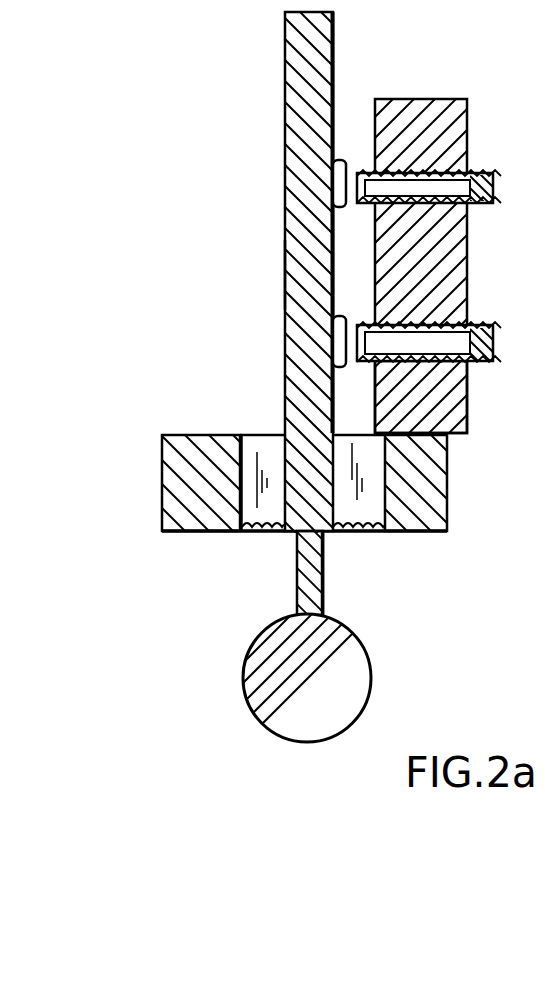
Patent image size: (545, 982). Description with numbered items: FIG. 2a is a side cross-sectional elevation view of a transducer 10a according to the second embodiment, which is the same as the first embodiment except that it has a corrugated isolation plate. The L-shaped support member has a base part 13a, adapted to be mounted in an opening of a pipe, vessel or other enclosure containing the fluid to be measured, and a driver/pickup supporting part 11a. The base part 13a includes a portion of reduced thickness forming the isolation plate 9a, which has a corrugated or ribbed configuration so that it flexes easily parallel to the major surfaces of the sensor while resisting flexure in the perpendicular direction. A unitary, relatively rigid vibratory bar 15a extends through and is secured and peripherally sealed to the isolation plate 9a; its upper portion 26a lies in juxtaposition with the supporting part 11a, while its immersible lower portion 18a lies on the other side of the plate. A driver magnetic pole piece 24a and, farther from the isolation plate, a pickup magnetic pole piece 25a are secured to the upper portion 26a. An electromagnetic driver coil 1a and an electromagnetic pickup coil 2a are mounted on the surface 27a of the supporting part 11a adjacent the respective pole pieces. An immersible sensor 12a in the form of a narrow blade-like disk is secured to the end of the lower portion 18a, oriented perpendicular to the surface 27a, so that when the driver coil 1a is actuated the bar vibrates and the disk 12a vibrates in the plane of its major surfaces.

The transducer 10a is at (203, 156).
The vibratory bar 15a is at (284, 76).
The surface of the driver/pickup supporting part 27a is at (375, 100).
The electromagnetic pickup coil 2a is at (485, 172).
The electromagnetic driver coil 1a is at (488, 332).
The driver/pickup supporting part 11a is at (470, 410).
The base part 13a is at (162, 478).
The isolation plate 9a is at (373, 532).
The upper portion of the vibratory bar 26a is at (283, 273).
The pickup magnetic pole piece 25a is at (340, 207).
The driver magnetic pole piece 24a is at (340, 358).
The lower portion of the vibratory bar 18a is at (297, 572).
The immersible sensor 12a is at (243, 673).